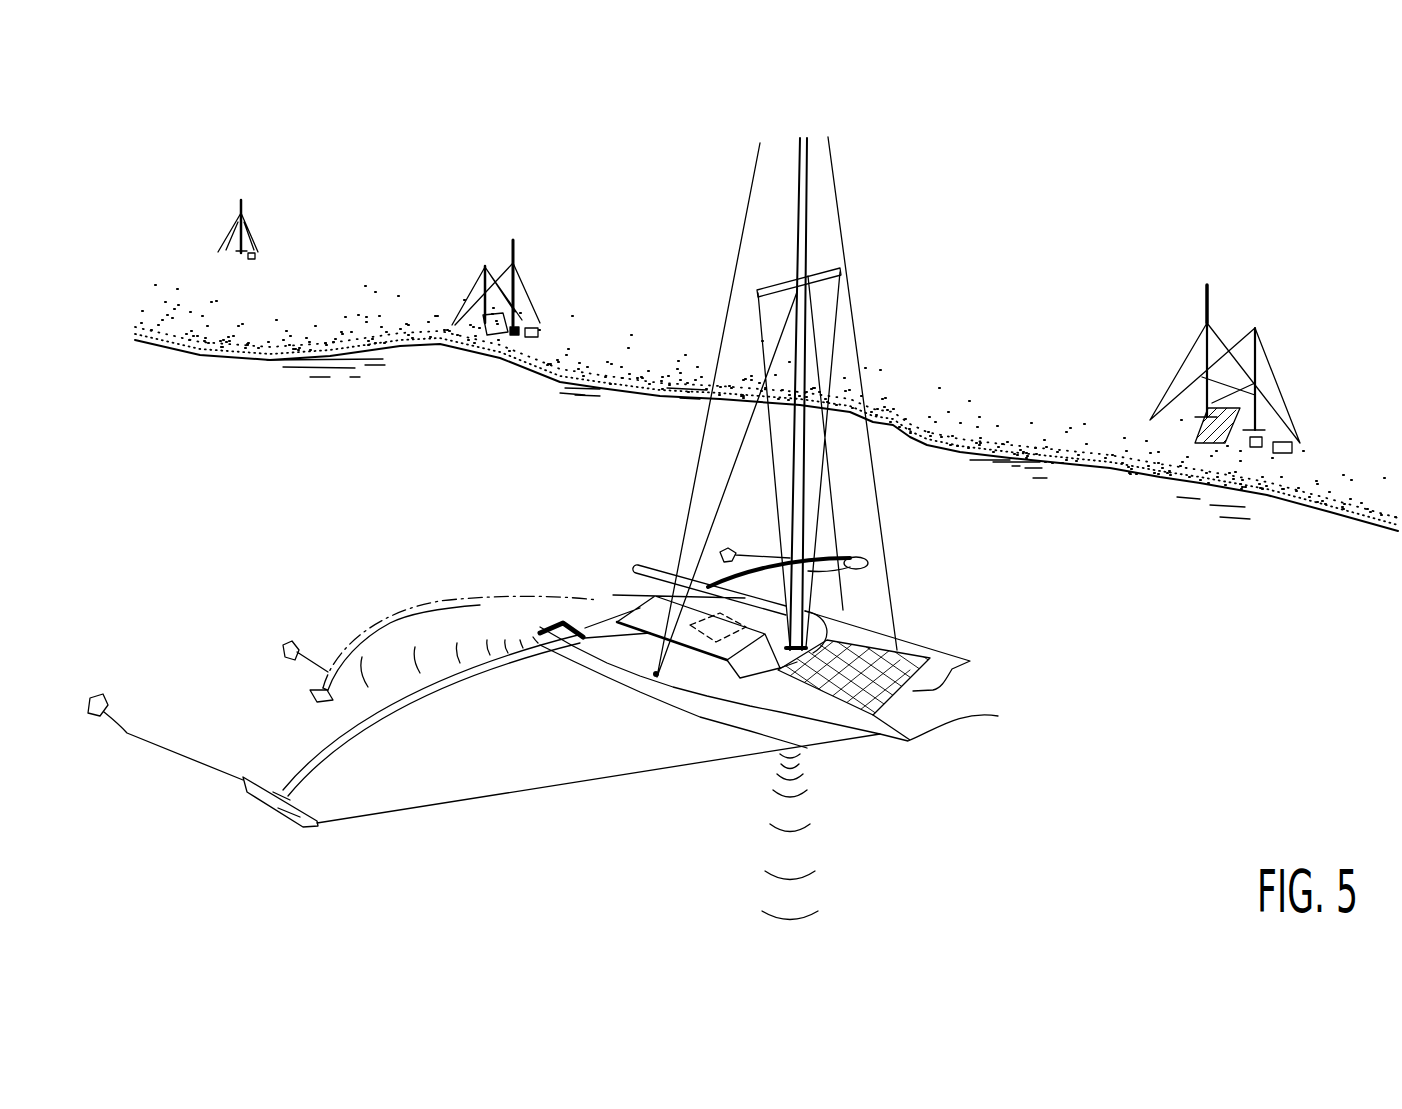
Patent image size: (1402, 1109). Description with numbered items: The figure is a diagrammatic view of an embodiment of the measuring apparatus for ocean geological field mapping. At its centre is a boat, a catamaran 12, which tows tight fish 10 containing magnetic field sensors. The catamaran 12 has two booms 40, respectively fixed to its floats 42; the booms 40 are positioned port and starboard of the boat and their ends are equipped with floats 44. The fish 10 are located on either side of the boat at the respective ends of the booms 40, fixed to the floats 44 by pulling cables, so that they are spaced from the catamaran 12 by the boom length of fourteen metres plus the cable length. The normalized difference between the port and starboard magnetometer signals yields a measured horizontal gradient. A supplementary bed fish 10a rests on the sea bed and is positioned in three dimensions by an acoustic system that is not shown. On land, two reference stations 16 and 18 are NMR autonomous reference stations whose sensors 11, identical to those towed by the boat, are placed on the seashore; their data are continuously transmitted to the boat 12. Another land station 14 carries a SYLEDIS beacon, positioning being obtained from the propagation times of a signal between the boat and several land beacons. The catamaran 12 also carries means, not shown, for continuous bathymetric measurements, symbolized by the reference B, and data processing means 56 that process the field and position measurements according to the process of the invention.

The tight fish 10 is at (97, 688).
The supplementary bed fish 10a is at (280, 631).
The sensors 11 is at (256, 257).
The boat (catamaran) 12 is at (912, 771).
The land station 14 is at (214, 230).
The reference station on land 16 is at (495, 253).
The reference station on land 18 is at (1250, 297).
The booms 40 is at (387, 707).
The floats 42 is at (960, 667).
The floats 44 is at (287, 818).
The data processing means 56 is at (707, 642).
The bathymetric measurements B is at (770, 880).